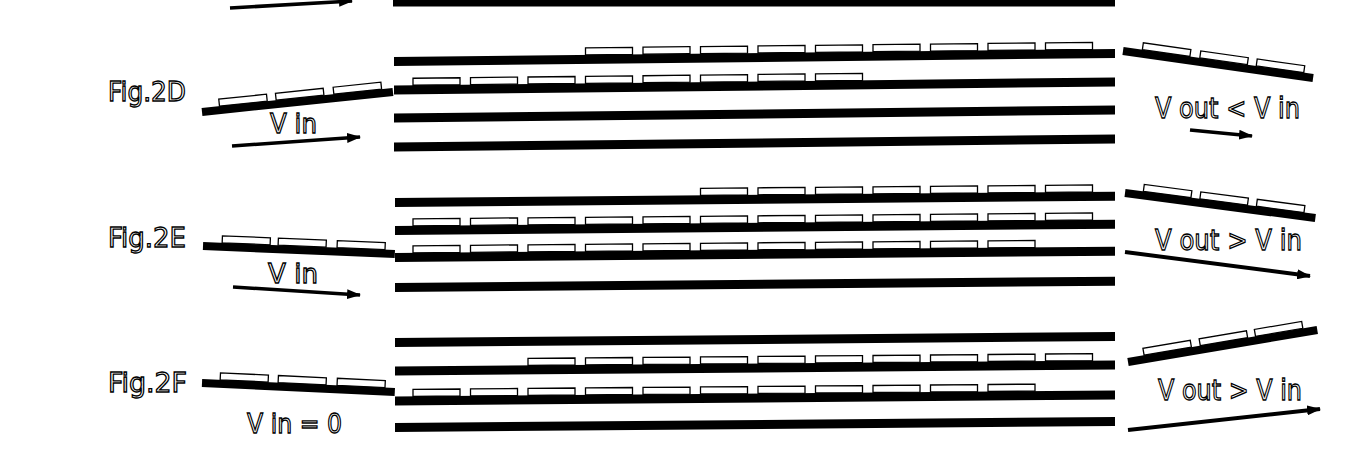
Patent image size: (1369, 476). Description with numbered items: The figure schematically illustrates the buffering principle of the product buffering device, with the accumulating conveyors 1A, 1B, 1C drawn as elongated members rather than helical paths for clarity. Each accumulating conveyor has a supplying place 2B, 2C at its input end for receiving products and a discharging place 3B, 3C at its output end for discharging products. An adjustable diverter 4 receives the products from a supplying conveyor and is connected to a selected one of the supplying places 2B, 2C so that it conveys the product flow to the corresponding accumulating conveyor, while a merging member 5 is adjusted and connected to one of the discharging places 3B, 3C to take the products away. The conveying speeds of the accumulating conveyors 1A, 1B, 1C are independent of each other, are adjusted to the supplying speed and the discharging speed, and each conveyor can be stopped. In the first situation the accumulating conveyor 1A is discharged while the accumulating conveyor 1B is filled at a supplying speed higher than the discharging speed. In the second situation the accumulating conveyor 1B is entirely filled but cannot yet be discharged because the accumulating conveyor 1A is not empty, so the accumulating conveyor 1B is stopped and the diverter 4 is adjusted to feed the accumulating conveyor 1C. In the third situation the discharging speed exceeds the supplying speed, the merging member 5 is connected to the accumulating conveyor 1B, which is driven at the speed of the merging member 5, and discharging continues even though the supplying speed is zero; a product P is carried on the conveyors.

In FIG. 2D, the accumulating conveyor 1A is at (562, 55).
In FIG. 2E, the accumulating conveyor 1A is at (570, 197).
In FIG. 2F, the accumulating conveyor 1A is at (587, 337).
In FIG. 2D, the accumulating conveyor 1B is at (697, 85).
In FIG. 2E, the accumulating conveyor 1B is at (700, 222).
In FIG. 2F, the accumulating conveyor 1B is at (482, 367).
In FIG. 2E, the accumulating conveyor 1C is at (757, 248).
In FIG. 2F, the accumulating conveyor 1C is at (758, 393).
In FIG. 2D, the supplying place 2B is at (438, 82).
In FIG. 2E, the supplying place 2C is at (440, 256).
In FIG. 2F, the supplying place 2C is at (433, 395).
In FIG. 2D, the discharging place 3B is at (756, 49).
In FIG. 2E, the discharging place 3C is at (761, 205).
In FIG. 2F, the discharging place 3C is at (758, 348).
In FIG. 2D, the adjustable diverter 4 is at (295, 72).
In FIG. 2E, the adjustable diverter 4 is at (306, 224).
In FIG. 2F, the adjustable diverter 4 is at (301, 364).
In FIG. 2D, the merging member 5 is at (1232, 35).
In FIG. 2E, the merging member 5 is at (1242, 184).
In FIG. 2F, the merging member 5 is at (1242, 317).
In FIG. 2D, the electrode pad P is at (663, 52).
In FIG. 2F, the electrode pad P is at (850, 360).